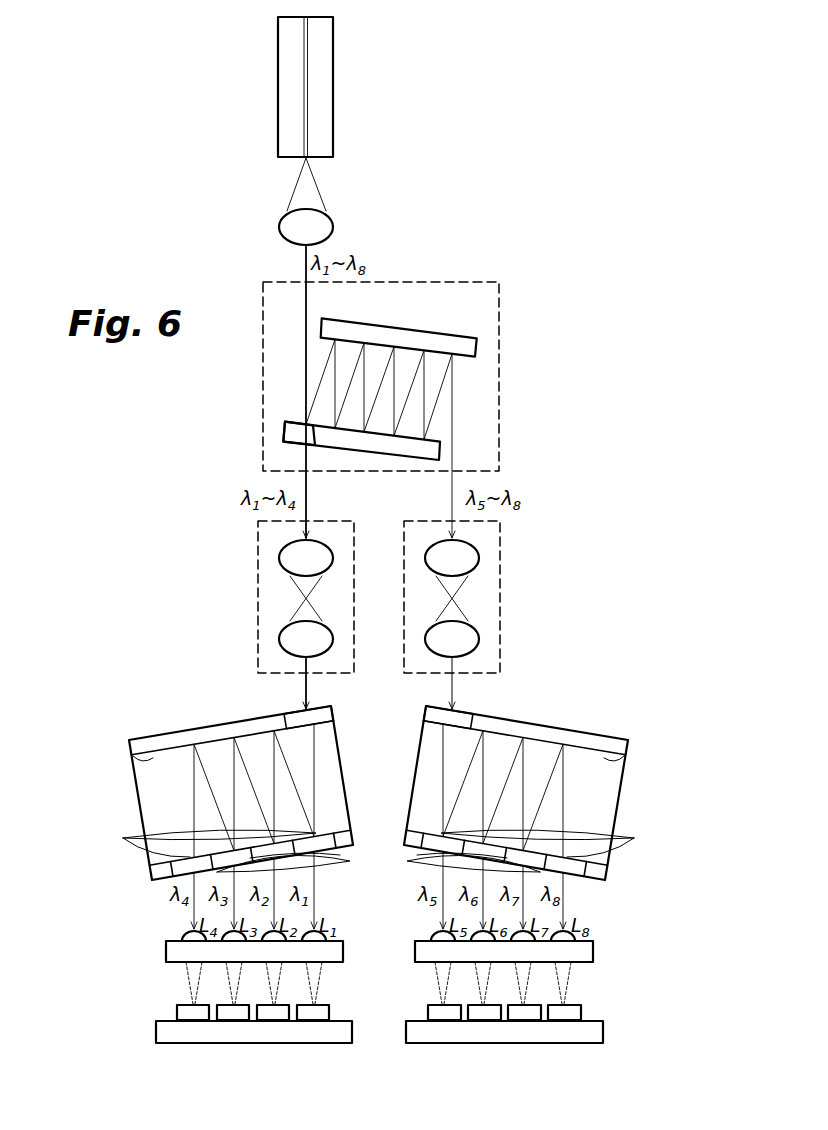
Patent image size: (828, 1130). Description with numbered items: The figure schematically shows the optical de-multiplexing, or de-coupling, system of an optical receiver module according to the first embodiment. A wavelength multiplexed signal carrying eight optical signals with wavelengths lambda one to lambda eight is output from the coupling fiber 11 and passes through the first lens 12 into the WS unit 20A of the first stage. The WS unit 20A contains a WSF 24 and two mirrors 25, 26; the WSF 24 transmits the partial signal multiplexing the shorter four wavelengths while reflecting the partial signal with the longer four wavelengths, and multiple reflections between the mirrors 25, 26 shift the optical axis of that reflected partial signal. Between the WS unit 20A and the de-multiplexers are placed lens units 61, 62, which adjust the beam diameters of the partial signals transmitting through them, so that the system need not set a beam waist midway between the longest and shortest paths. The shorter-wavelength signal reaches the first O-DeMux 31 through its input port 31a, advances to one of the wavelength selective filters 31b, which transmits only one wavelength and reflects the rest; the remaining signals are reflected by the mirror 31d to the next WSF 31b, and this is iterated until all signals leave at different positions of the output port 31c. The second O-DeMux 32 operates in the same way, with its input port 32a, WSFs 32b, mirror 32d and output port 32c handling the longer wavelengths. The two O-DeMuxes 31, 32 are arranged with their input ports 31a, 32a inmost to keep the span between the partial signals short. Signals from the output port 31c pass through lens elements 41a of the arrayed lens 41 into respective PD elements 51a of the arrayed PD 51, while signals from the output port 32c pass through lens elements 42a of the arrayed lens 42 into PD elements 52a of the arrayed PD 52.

The coupling fiber 11 is at (309, 70).
The first lens 12 is at (327, 227).
The WS unit 20A is at (500, 332).
The WSF 24 is at (286, 429).
The mirror 25 is at (455, 342).
The mirror 26 is at (440, 447).
The lens unit 61 is at (257, 580).
The lens unit 62 is at (501, 578).
The first O-DeMux 31 is at (146, 735).
The input port 31a is at (292, 714).
The wavelength selective filter 31b is at (123, 838).
The output port 31c is at (340, 855).
The mirror 31d is at (140, 760).
The second O-DeMux 32 is at (613, 731).
The input port 32a is at (464, 715).
The wavelength selective filter 32b is at (634, 838).
The output port 32c is at (417, 855).
The mirror 32d is at (616, 761).
The arrayed lens 41 is at (165, 950).
The lens element 41a is at (186, 937).
The arrayed lens 42 is at (592, 950).
The lens element 42a is at (436, 934).
The arrayed PD 51 is at (157, 1032).
The PD element 51a is at (177, 1013).
The arrayed PD 52 is at (596, 1033).
The PD element 52a is at (428, 1013).